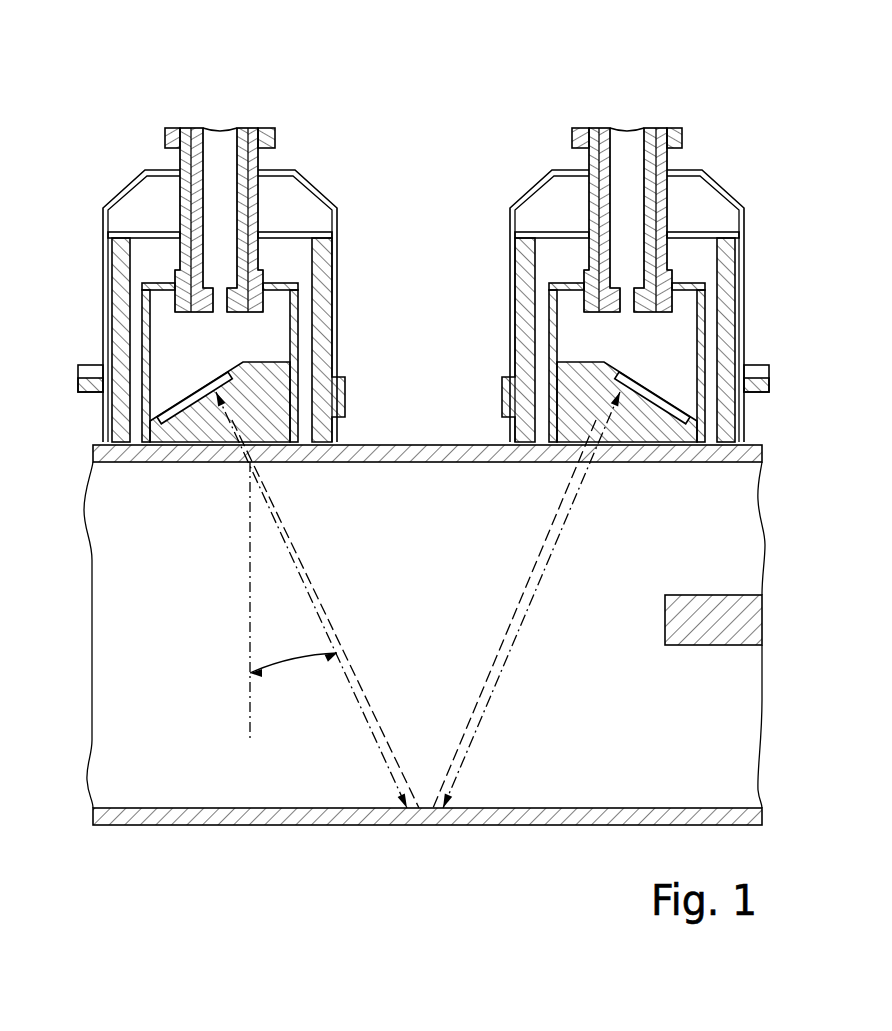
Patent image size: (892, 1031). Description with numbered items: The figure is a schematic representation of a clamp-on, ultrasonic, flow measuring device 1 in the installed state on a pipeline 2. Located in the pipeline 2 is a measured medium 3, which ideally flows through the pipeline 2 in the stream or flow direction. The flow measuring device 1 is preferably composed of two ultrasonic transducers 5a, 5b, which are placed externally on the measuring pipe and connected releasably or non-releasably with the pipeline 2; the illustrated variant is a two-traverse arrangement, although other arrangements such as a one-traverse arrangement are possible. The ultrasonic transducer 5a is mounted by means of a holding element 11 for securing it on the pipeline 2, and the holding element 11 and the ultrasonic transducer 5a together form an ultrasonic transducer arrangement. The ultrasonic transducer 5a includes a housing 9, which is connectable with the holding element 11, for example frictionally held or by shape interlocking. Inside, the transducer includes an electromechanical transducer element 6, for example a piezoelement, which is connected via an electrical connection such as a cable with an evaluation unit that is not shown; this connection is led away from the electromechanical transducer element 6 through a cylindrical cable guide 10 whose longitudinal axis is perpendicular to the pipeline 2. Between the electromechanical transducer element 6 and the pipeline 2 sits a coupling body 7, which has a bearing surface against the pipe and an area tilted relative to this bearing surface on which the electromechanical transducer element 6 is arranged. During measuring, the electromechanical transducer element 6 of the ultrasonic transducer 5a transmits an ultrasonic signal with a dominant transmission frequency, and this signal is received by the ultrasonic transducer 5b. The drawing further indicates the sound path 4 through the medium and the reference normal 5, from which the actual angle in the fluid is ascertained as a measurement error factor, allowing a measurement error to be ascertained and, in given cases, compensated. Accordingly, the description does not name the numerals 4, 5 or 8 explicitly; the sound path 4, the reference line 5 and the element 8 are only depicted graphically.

The clamp-on, ultrasonic, flow measuring device 1 is at (430, 218).
The pipeline 2 is at (180, 822).
The measured medium 3 is at (125, 660).
The light beam 4 is at (357, 697).
The normal axis 5 is at (237, 720).
The ultrasonic transducer 5a is at (265, 338).
The ultrasonic transducer 5b is at (680, 353).
The electromechanical transducer element 6 is at (205, 387).
The coupling body 7 is at (157, 433).
The plate 8 is at (277, 288).
The housing 9 is at (550, 172).
The cylindrical cable guide 10 is at (218, 147).
The holding element 11 is at (335, 400).